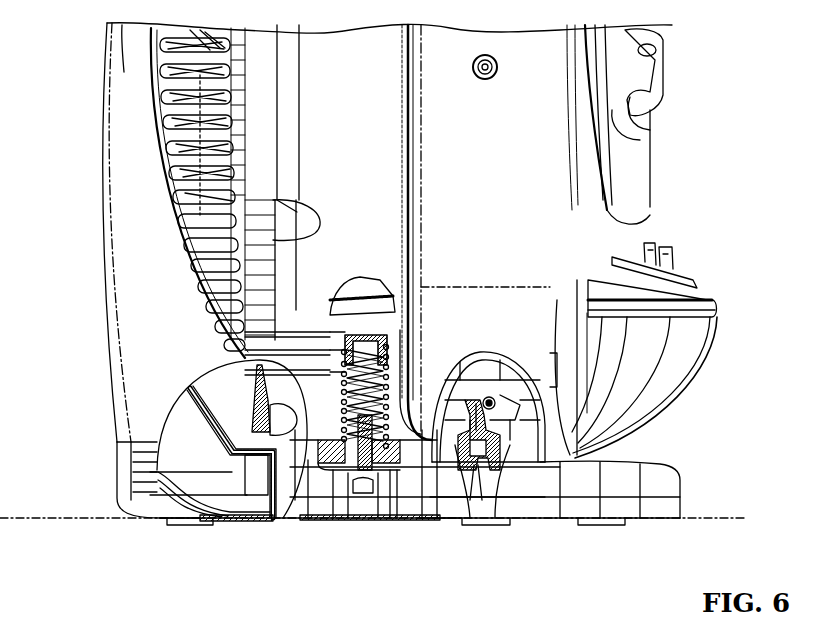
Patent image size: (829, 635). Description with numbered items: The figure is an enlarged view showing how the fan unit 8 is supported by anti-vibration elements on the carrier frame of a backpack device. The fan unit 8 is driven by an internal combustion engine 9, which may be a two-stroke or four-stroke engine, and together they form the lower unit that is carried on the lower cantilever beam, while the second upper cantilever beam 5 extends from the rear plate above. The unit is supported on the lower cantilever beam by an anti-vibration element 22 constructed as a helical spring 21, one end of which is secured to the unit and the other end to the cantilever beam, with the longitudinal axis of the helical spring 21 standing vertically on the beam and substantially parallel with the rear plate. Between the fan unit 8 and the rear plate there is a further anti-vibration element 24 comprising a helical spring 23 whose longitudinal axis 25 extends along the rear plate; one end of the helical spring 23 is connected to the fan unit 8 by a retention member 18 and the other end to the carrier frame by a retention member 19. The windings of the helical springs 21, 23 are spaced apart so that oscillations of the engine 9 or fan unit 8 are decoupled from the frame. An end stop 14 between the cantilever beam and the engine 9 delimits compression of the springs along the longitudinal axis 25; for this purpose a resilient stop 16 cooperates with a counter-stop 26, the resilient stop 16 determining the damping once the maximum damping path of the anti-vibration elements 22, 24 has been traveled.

The second upper cantilever beam 5 is at (643, 518).
The fan unit 8 is at (358, 248).
The internal combustion engine 9 is at (525, 152).
The end stop 14 is at (453, 513).
The resilient stop 16 is at (490, 442).
The retention member 18 is at (217, 72).
The retention member 19 is at (213, 223).
The helical spring 21 is at (345, 450).
The anti-vibration element 22 is at (376, 452).
The helical spring 23 is at (217, 177).
The anti-vibration element 24 is at (207, 132).
The longitudinal axis 25 is at (213, 100).
The counter-stop 26 is at (470, 445).